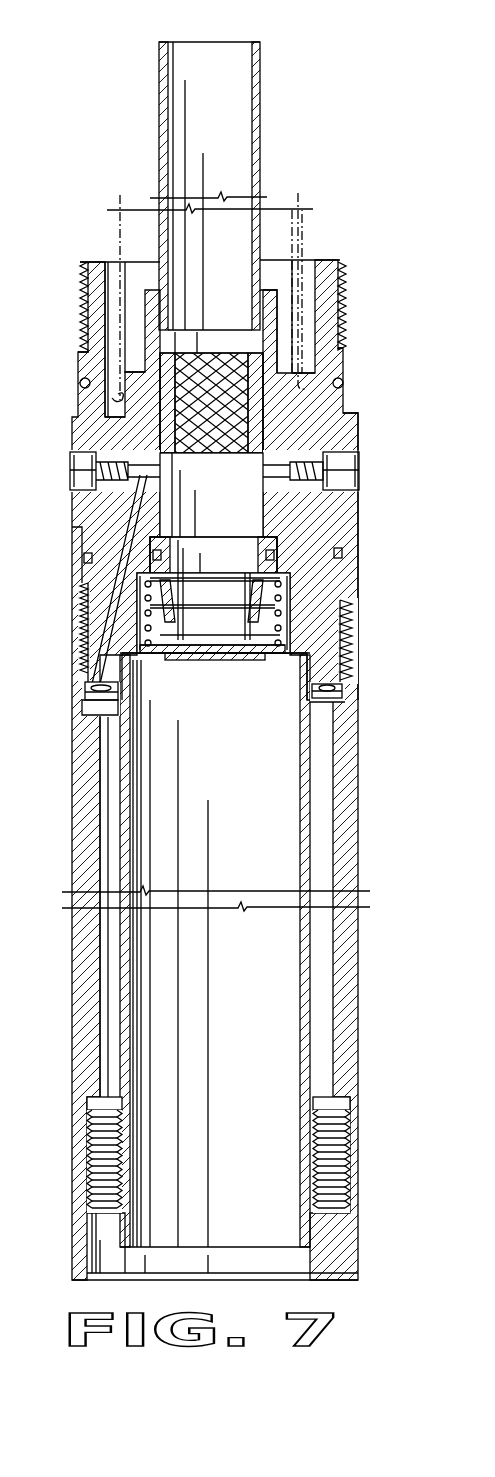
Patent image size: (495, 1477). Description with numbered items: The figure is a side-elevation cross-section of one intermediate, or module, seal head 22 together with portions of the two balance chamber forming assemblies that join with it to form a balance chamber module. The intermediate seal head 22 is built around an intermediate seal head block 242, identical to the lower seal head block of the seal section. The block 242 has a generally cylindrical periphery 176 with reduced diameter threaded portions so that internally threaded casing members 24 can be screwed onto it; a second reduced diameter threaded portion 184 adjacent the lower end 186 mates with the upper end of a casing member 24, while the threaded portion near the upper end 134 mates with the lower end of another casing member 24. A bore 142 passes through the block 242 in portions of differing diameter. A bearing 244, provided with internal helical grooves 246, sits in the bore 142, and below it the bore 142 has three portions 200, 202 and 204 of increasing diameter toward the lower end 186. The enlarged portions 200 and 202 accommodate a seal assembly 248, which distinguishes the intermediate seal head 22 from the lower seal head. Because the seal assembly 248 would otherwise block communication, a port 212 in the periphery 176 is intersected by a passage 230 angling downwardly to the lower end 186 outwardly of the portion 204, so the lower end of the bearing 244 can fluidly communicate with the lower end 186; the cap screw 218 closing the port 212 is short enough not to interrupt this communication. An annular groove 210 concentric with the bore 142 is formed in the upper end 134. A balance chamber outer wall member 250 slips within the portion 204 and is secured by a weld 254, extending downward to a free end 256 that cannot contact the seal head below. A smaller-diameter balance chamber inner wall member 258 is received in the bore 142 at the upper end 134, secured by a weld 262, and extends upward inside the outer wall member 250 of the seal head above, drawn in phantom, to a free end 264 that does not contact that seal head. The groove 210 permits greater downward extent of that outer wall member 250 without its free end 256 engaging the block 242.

The intermediate seal head 22 is at (252, 770).
The casing member 24 is at (345, 987).
The upper end 134 is at (95, 262).
The bore 142 is at (168, 508).
The periphery 176 is at (356, 510).
The second reduced diameter threaded portion 184 is at (352, 653).
The lower end 186 is at (345, 690).
The bore portion 200 is at (272, 541).
The bore portion 202 is at (275, 613).
The bore portion 204 is at (305, 672).
The annular groove 210 is at (118, 398).
The port 212 is at (97, 455).
The cap screw 218 is at (89, 459).
The passage 230 is at (105, 628).
The intermediate seal head block 242 is at (325, 268).
The bearing 244 is at (287, 373).
The internal helical grooves 246 is at (214, 358).
The seal assembly 248 is at (286, 612).
The balance chamber outer wall member 250 is at (300, 200).
The weld 254 is at (90, 690).
The free end 256 is at (332, 384).
The balance chamber inner wall member 258 is at (254, 100).
The weld 262 is at (265, 292).
The free end 264 is at (262, 42).